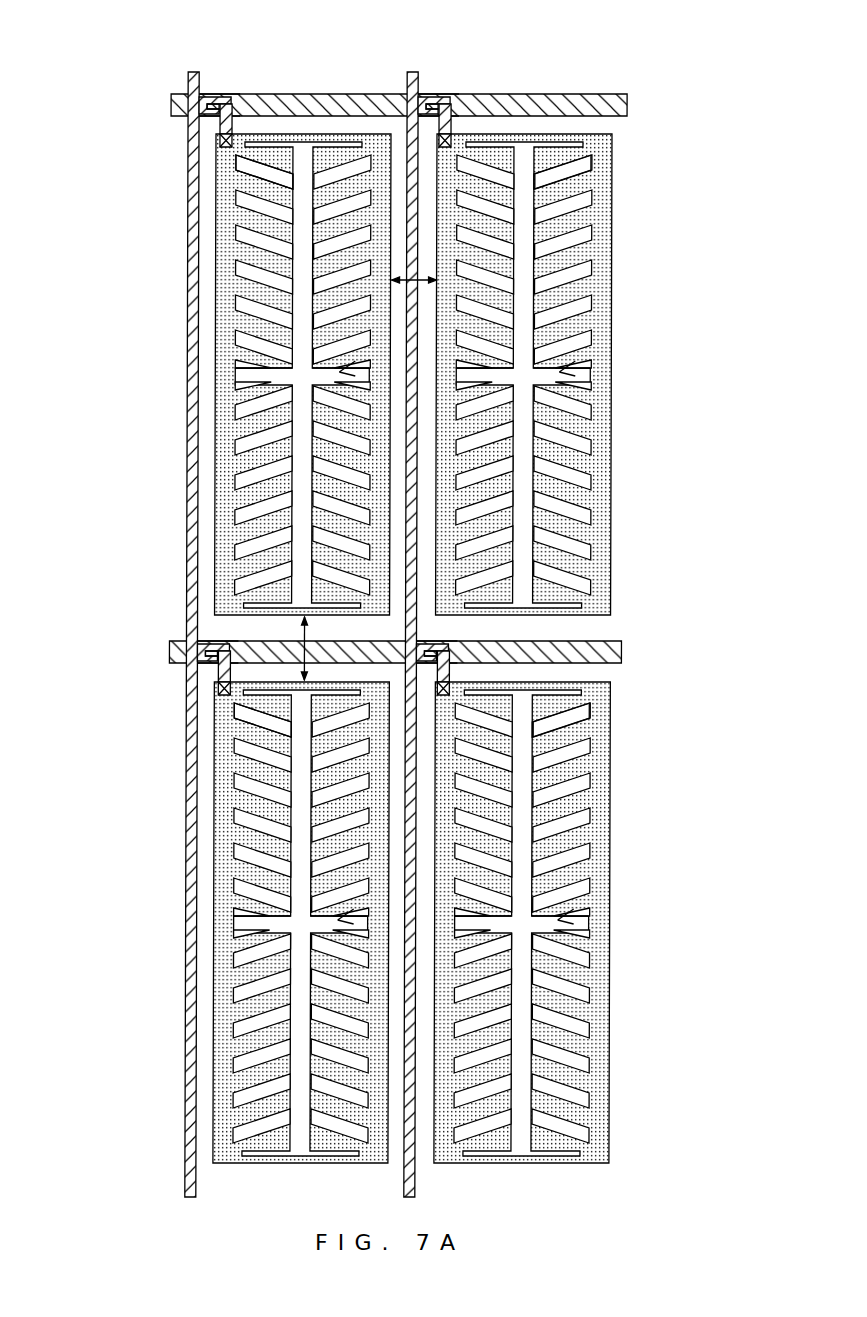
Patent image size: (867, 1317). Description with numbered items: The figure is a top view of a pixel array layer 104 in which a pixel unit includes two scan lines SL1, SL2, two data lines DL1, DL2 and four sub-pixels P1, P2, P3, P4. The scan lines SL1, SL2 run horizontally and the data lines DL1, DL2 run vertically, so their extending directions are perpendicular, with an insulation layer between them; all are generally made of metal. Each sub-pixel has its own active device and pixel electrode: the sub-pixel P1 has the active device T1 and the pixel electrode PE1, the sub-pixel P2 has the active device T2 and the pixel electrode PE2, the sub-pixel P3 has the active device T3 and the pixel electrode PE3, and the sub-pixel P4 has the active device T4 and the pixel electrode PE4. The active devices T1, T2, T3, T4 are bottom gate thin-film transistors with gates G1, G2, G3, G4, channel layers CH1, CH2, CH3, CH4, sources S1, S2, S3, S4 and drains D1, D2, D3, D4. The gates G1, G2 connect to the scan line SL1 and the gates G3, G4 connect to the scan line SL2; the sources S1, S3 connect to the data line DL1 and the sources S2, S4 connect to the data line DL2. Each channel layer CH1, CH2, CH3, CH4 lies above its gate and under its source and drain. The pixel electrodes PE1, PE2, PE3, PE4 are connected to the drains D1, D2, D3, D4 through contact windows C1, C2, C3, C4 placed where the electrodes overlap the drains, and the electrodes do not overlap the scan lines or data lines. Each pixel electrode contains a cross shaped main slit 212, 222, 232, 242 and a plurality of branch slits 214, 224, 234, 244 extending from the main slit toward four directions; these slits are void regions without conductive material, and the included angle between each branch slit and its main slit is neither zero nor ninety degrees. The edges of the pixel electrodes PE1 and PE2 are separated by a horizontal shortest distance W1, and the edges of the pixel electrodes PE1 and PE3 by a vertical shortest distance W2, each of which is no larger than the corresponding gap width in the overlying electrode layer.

The pixel array layer 104 is at (379, 604).
The data line DL1 is at (188, 80).
The data line DL2 is at (407, 78).
The scan line SL1 is at (171, 106).
The scan line SL2 is at (245, 641).
The sub-pixel P1 is at (210, 313).
The sub-pixel P2 is at (573, 313).
The sub-pixel P3 is at (208, 881).
The sub-pixel P4 is at (566, 876).
The active device T1 is at (249, 72).
The active device T2 is at (466, 72).
The active device T3 is at (160, 656).
The active device T4 is at (566, 636).
The source S1 is at (203, 97).
The source S2 is at (422, 97).
The source S3 is at (205, 648).
The source S4 is at (426, 647).
The gate G1 is at (211, 98).
The gate G2 is at (430, 98).
The gate G3 is at (212, 645).
The gate G4 is at (430, 650).
The channel layer CH1 is at (226, 104).
The channel layer CH2 is at (445, 104).
The channel layer CH3 is at (220, 656).
The channel layer CH4 is at (440, 655).
The drain D1 is at (200, 45).
The drain D2 is at (478, 88).
The drain D3 is at (232, 652).
The drain D4 is at (452, 662).
The contact window C1 is at (240, 140).
The contact window C2 is at (459, 140).
The contact window C3 is at (221, 690).
The contact window C4 is at (470, 686).
The pixel electrode PE1 is at (216, 233).
The pixel electrode PE2 is at (609, 300).
The pixel electrode PE3 is at (216, 818).
The pixel electrode PE4 is at (608, 781).
The main slit 212 is at (236, 376).
The branch slits 214 is at (237, 204).
The main slit 222 is at (573, 375).
The branch slits 224 is at (583, 267).
The main slit 232 is at (236, 924).
The branch slits 234 is at (237, 793).
The main slit 242 is at (570, 922).
The branch slits 244 is at (583, 747).
The horizontal shortest distance W1 is at (414, 269).
The vertical shortest distance W2 is at (292, 648).